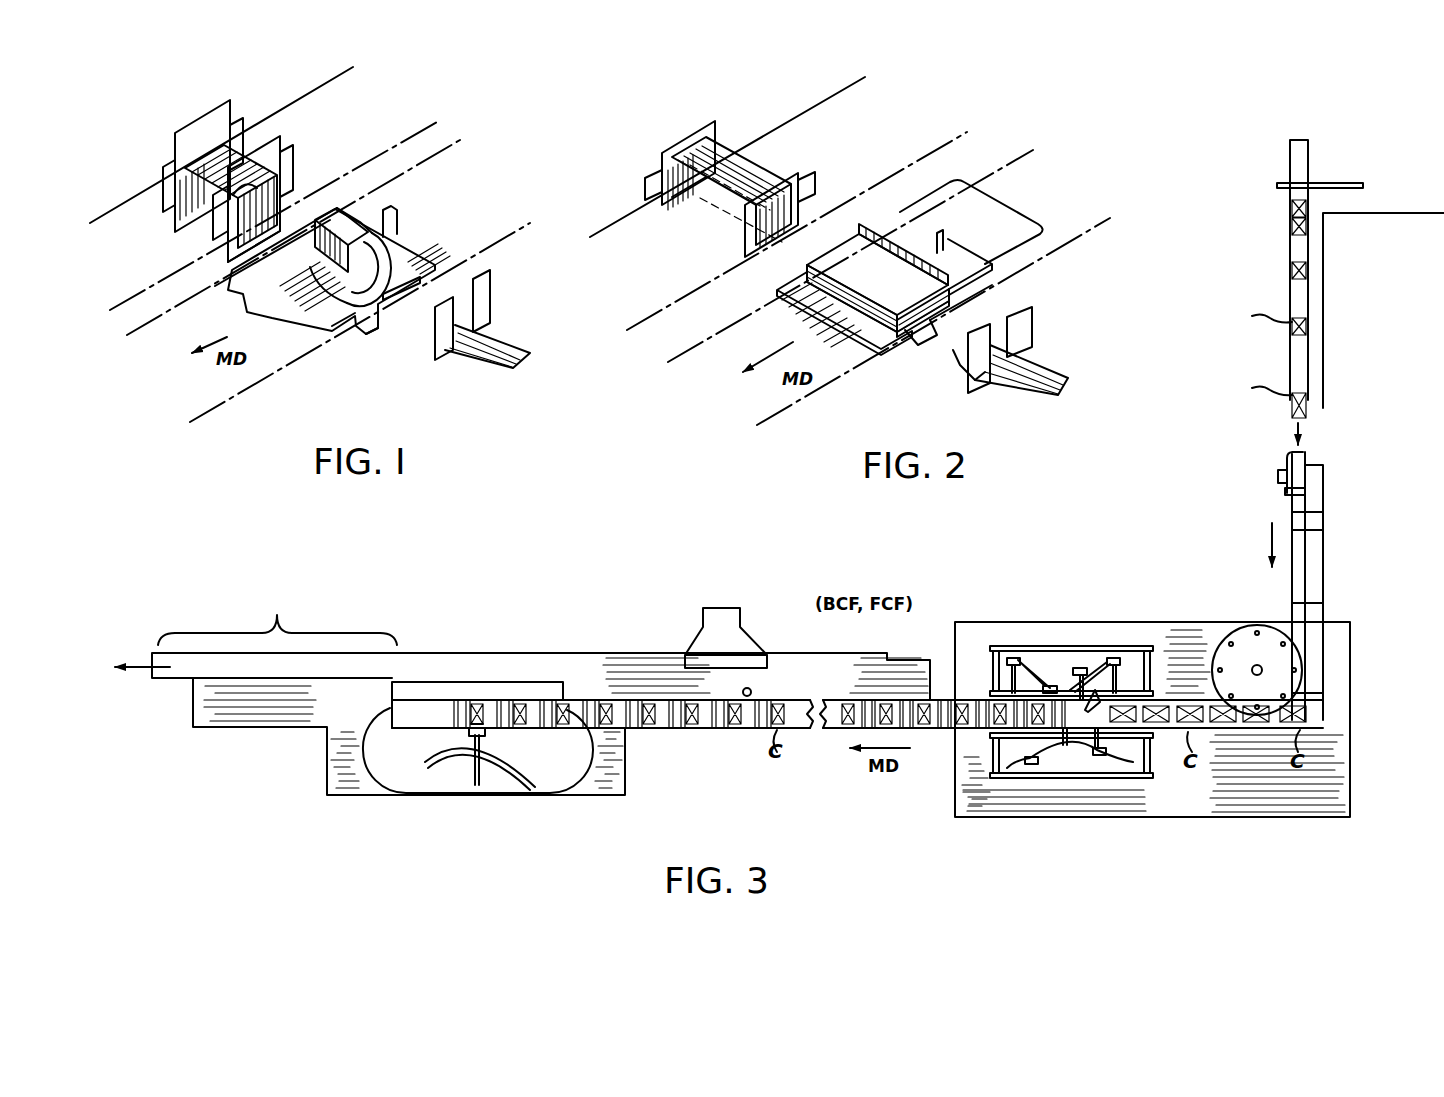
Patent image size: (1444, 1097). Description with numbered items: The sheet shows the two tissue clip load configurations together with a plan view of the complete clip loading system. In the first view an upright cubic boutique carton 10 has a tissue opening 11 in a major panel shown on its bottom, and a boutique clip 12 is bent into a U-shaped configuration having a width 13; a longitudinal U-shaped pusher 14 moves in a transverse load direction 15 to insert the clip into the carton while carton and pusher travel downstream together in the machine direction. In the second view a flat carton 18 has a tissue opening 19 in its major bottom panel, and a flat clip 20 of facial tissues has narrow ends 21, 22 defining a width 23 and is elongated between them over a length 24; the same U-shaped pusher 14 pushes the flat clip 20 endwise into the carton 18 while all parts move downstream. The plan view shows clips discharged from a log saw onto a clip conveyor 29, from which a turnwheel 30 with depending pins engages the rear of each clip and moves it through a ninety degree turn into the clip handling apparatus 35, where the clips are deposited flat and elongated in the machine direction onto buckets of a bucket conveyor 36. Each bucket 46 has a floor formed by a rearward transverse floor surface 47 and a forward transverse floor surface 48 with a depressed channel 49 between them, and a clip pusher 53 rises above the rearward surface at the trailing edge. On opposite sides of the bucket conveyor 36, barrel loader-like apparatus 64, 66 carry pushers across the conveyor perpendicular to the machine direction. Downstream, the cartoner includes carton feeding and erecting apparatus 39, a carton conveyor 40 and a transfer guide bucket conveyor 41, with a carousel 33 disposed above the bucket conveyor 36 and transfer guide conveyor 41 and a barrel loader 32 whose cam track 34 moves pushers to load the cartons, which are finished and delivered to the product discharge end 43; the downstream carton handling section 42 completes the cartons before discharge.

In FIG. 1, the boutique carton 10 is at (249, 125).
In FIG. 1, the tissue opening 11 is at (252, 206).
In FIG. 1, the boutique clip 12 is at (352, 230).
In FIG. 1, the width 13 is at (242, 312).
In FIG. 1, the U-shaped pusher 14 is at (508, 322).
In FIG. 2, the U-shaped pusher 14 is at (1043, 362).
In FIG. 3, the U-shaped pusher 14 is at (484, 738).
In FIG. 1, the load direction 15 is at (410, 308).
In FIG. 2, the flat carton 18 is at (788, 180).
In FIG. 2, the tissue opening 19 is at (752, 182).
In FIG. 2, the flat clip 20 is at (868, 274).
In FIG. 3, the flat clip 20 is at (1092, 695).
In FIG. 2, the narrow end 21 is at (840, 235).
In FIG. 2, the narrow end 22 is at (934, 300).
In FIG. 2, the width 23 is at (962, 350).
In FIG. 2, the length 24 is at (1005, 200).
In FIG. 3, the clip conveyor 29 is at (1325, 567).
In FIG. 3, the turnwheel 30 is at (1243, 642).
In FIG. 3, the barrel loader 32 is at (455, 770).
In FIG. 3, the carousel 33 is at (357, 752).
In FIG. 3, the cam track 34 is at (508, 778).
In FIG. 3, the clip handling apparatus 35 is at (1025, 795).
In FIG. 3, the bucket conveyor 36 is at (688, 735).
In FIG. 3, the carton feeding and erecting apparatus 39 is at (740, 617).
In FIG. 3, the carton conveyor 40 is at (425, 652).
In FIG. 3, the transfer guide bucket conveyor 41 is at (478, 690).
In FIG. 3, the discharge section 42 is at (277, 617).
In FIG. 3, the product discharge end 43 is at (152, 658).
In FIG. 1, the bucket 46 is at (337, 348).
In FIG. 2, the bucket 46 is at (988, 297).
In FIG. 2, the rearward transverse floor surface 47 is at (955, 275).
In FIG. 2, the forward transverse floor surface 48 is at (812, 306).
In FIG. 1, the channel 49 is at (382, 318).
In FIG. 2, the channel 49 is at (920, 345).
In FIG. 2, the clip pusher 53 is at (945, 236).
In FIG. 3, the barrel loader-like apparatus 64 is at (1062, 642).
In FIG. 3, the barrel loader-like apparatus 66 is at (1072, 782).